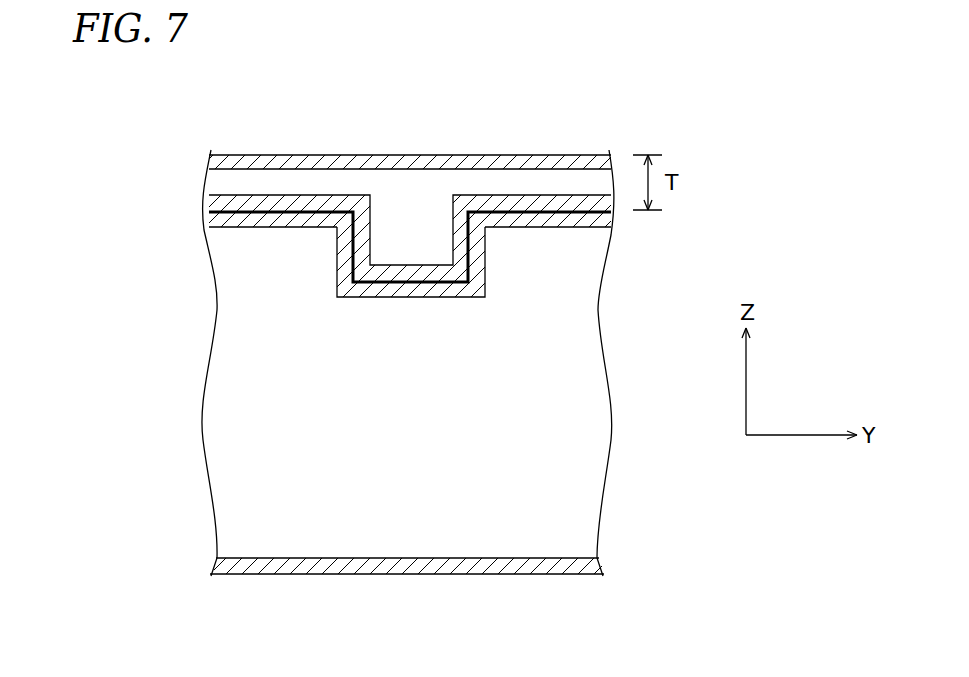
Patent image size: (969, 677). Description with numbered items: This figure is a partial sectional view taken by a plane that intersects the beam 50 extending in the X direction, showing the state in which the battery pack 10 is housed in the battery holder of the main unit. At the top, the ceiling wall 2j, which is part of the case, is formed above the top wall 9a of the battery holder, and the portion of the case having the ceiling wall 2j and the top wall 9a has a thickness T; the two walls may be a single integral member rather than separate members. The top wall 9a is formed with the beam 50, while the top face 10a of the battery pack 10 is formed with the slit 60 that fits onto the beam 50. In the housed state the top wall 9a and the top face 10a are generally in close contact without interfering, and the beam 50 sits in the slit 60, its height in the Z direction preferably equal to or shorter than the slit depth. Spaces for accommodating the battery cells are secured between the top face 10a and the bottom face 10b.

The battery pack 10 is at (570, 378).
The top face 10a is at (525, 220).
The bottom face 10b is at (523, 563).
The ceiling wall 2j is at (290, 158).
The top wall 9a is at (249, 203).
The beam 50 is at (383, 261).
The slit 60 is at (492, 296).